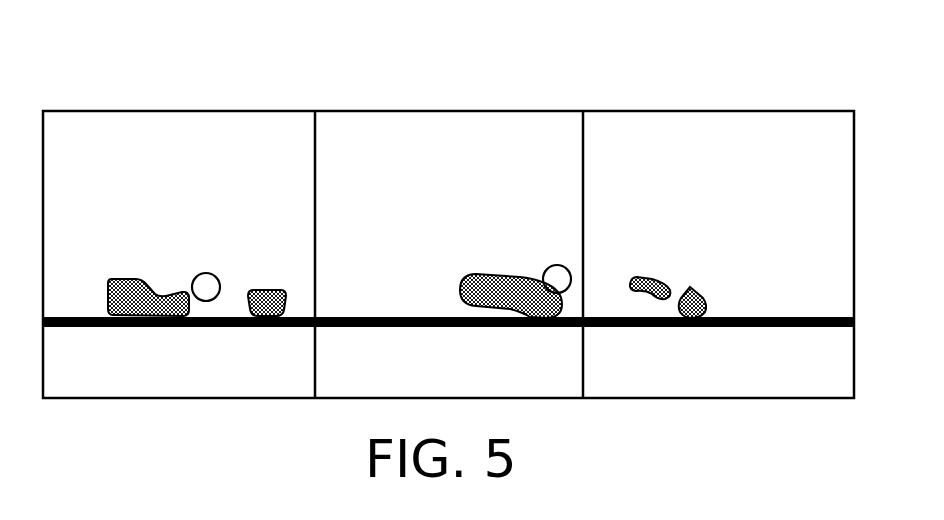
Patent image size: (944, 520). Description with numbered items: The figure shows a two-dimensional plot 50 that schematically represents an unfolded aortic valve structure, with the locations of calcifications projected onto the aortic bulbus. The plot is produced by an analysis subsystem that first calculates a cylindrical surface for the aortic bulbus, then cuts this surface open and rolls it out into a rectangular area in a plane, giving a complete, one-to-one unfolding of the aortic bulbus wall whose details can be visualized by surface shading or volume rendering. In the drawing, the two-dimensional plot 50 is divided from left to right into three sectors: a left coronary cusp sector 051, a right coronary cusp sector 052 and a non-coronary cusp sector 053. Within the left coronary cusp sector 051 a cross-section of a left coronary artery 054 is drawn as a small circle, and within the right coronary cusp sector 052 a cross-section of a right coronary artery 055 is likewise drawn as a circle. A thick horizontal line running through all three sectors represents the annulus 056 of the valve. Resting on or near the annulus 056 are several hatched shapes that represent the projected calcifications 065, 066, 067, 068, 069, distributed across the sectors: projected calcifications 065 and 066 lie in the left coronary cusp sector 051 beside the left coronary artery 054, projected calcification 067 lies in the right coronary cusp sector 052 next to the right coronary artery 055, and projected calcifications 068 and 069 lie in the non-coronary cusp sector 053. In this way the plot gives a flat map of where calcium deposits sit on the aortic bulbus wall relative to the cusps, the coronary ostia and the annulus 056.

The two-dimensional plot 50 is at (450, 110).
The left coronary cusp sector 051 is at (201, 388).
The right coronary cusp sector 052 is at (472, 388).
The non-coronary cusp sector 053 is at (742, 388).
The left coronary artery 054 is at (204, 273).
The right coronary artery 055 is at (556, 265).
The annulus 056 is at (68, 317).
The projected calcification 065 is at (125, 279).
The projected calcification 066 is at (268, 290).
The projected calcification 067 is at (473, 274).
The projected calcification 068 is at (650, 277).
The projected calcification 069 is at (700, 295).